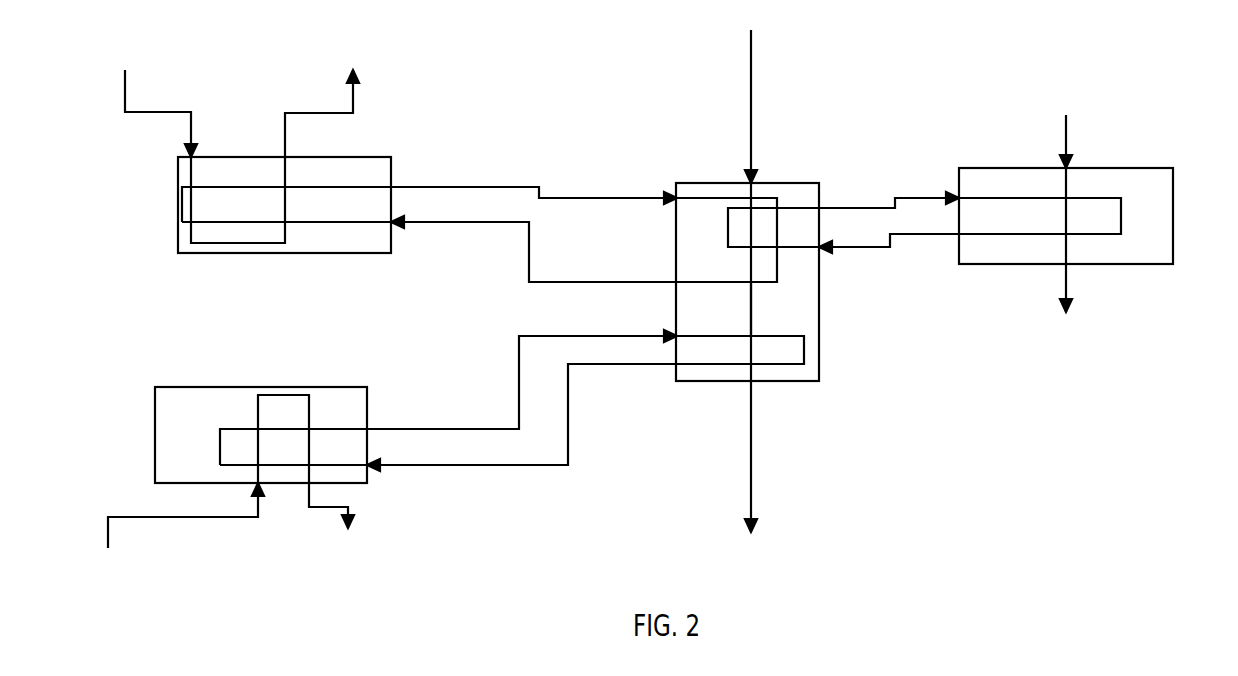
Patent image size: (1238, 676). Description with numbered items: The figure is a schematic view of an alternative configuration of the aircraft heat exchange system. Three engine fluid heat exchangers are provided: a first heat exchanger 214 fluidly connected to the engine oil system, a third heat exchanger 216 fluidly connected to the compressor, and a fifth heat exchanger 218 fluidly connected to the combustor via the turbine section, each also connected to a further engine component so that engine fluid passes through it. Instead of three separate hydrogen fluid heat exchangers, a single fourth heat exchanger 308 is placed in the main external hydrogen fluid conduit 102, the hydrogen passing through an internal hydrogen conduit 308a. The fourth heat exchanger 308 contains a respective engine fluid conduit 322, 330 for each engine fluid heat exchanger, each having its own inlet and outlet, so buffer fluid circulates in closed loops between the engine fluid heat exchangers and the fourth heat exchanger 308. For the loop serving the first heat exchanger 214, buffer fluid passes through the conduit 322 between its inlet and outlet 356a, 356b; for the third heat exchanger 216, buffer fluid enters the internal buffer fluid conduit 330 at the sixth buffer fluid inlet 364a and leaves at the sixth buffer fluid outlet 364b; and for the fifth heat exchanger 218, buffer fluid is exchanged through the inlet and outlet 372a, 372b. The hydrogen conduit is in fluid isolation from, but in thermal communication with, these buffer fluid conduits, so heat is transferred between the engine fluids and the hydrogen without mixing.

The main external hydrogen fluid conduit 102 is at (753, 107).
The first heat exchanger 214 is at (370, 157).
The third heat exchanger 216 is at (347, 387).
The fifth heat exchanger 218 is at (1132, 168).
The fourth heat exchanger 308 is at (820, 299).
The internal hydrogen conduit 308a is at (753, 313).
The engine fluid conduit 322 is at (733, 197).
The engine fluid conduit 330 is at (715, 365).
The heat transfer fluid supply line 356a is at (672, 188).
The heat transfer fluid return line 356b is at (676, 282).
The sixth buffer fluid inlet 364a is at (674, 334).
The sixth buffer fluid outlet 364b is at (676, 366).
The heat transfer fluid return line 372a is at (822, 250).
The heat transfer fluid supply line 372b is at (820, 207).